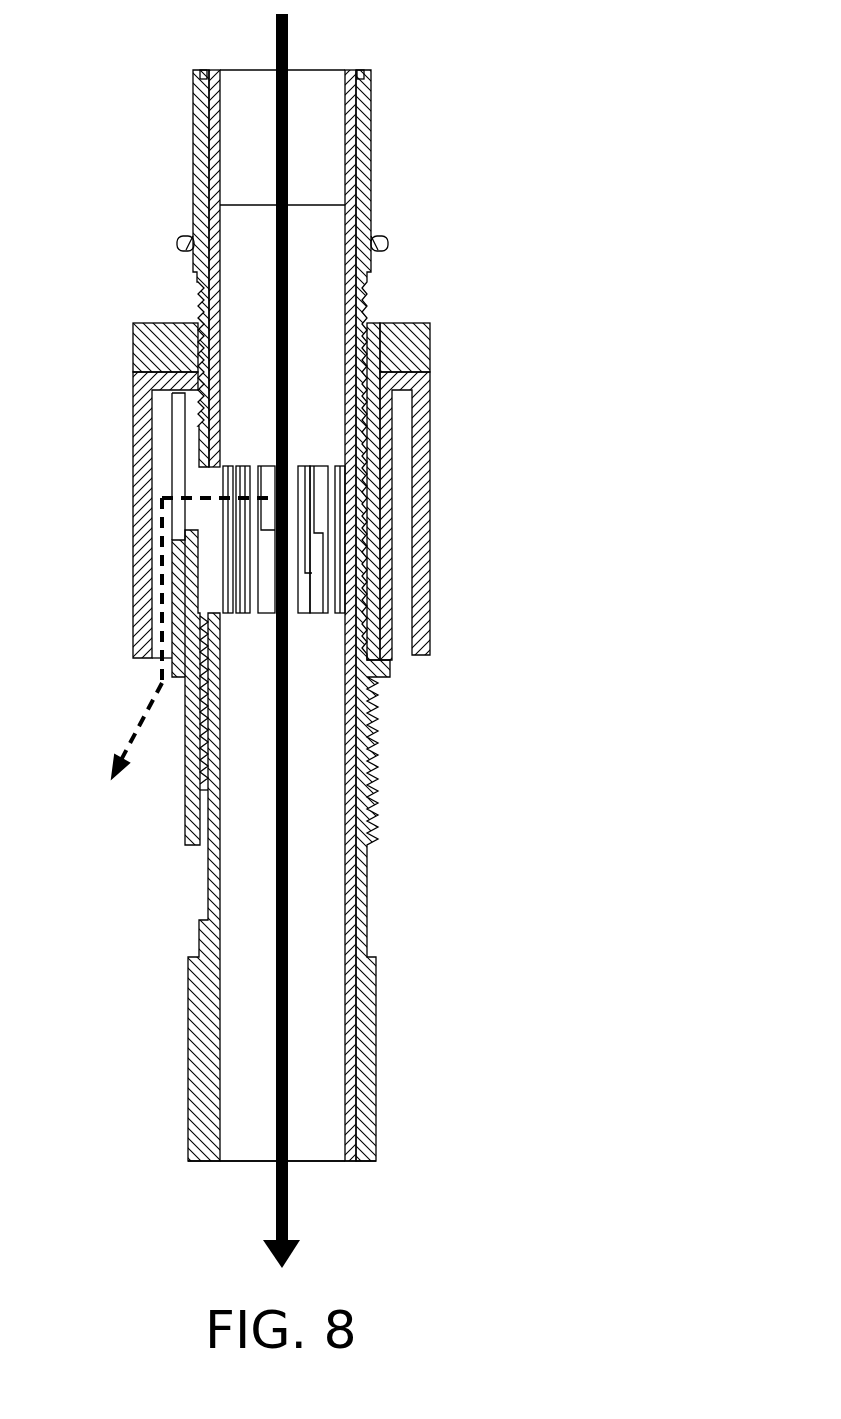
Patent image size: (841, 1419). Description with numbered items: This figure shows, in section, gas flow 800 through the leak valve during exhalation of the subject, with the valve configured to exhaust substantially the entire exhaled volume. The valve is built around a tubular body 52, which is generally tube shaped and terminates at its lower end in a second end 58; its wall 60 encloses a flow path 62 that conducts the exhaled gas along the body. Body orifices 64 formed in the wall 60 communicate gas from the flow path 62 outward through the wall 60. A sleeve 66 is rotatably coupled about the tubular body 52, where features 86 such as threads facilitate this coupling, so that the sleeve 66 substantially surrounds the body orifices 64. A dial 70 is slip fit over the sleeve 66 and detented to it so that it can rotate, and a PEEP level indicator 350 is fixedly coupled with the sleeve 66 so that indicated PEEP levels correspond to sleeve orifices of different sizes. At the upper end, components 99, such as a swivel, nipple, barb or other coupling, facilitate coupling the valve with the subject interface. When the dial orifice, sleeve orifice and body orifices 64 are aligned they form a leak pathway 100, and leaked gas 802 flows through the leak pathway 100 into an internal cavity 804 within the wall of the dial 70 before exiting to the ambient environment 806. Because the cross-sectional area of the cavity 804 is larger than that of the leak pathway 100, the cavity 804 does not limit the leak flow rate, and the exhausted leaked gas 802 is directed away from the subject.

The tubular body 52 is at (376, 1060).
The second end 58 is at (370, 1163).
The wall 60 is at (355, 900).
The flow path 62 is at (313, 98).
The body orifices 64 is at (300, 575).
The sleeve 66 is at (380, 762).
The dial 70 is at (431, 442).
The features 86 is at (198, 300).
The components 99 is at (372, 153).
The leak pathway 100 is at (207, 506).
The PEEP level indicator 350 is at (431, 345).
The gas flow 800 is at (276, 1212).
The leaked gas 802 is at (132, 744).
The internal cavity 804 is at (163, 437).
The ambient environment 806 is at (133, 660).